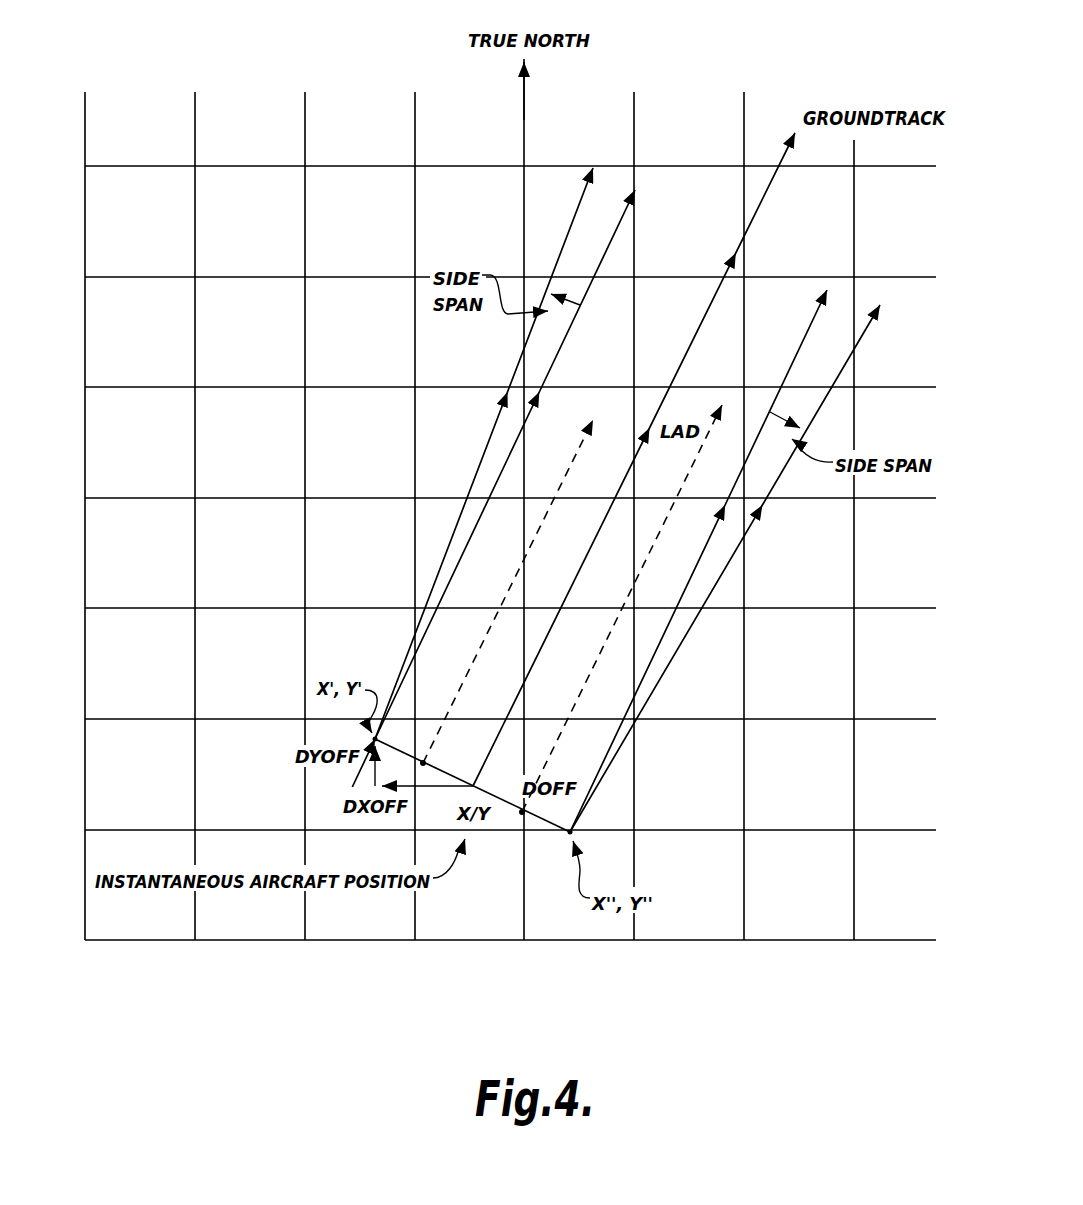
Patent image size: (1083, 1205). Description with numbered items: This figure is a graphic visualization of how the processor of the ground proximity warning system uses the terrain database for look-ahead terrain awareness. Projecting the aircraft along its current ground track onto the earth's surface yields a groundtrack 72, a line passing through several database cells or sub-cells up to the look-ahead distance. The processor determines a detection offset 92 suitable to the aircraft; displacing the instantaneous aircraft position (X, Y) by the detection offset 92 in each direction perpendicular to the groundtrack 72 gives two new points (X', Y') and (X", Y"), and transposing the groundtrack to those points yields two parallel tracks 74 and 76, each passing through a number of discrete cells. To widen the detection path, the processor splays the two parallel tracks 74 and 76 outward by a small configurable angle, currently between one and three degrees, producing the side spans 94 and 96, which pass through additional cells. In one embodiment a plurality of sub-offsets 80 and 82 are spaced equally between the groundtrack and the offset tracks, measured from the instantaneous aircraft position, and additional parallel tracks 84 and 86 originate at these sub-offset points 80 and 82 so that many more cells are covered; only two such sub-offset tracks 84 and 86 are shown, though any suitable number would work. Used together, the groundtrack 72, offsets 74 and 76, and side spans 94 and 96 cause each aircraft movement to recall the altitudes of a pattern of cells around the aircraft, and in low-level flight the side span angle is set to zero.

The groundtrack 72 is at (712, 300).
The parallel track 74 is at (617, 233).
The parallel track 76 is at (795, 357).
The sub-offset 80 is at (431, 762).
The sub-offset 82 is at (522, 811).
The sub-offset track 84 is at (479, 648).
The sub-offset track 86 is at (599, 651).
The detection offset 92 is at (547, 820).
The side span 94 is at (487, 440).
The side span 96 is at (774, 487).